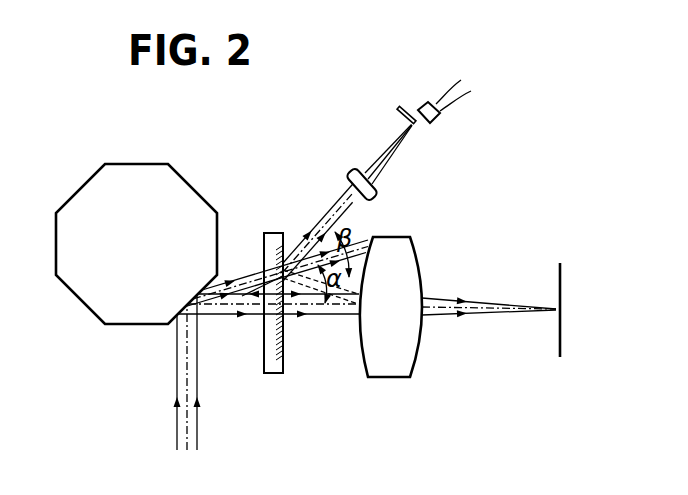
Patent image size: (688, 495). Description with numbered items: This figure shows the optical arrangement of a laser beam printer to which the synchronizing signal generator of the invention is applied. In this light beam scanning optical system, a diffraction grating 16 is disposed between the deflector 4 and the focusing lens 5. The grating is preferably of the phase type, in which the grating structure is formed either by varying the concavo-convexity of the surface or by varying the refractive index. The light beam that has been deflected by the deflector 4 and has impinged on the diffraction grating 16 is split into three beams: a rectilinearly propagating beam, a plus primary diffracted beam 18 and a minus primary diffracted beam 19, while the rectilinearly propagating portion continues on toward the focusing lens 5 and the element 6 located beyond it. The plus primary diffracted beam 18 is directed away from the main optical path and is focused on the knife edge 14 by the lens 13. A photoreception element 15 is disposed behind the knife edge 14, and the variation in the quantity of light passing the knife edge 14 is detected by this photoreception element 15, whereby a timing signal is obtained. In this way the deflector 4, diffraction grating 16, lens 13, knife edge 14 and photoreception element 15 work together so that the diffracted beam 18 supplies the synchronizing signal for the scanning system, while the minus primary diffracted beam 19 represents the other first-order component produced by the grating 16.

The deflector 4 is at (130, 313).
The focusing lens 5 is at (387, 368).
The plane mirror 6 is at (560, 330).
The lens 13 is at (345, 172).
The knife edge 14 is at (402, 105).
The photoreception element 15 is at (440, 120).
The diffraction grating 16 is at (272, 373).
The plus primary diffracted beam 18 is at (315, 232).
The minus primary diffracted beam 19 is at (343, 303).